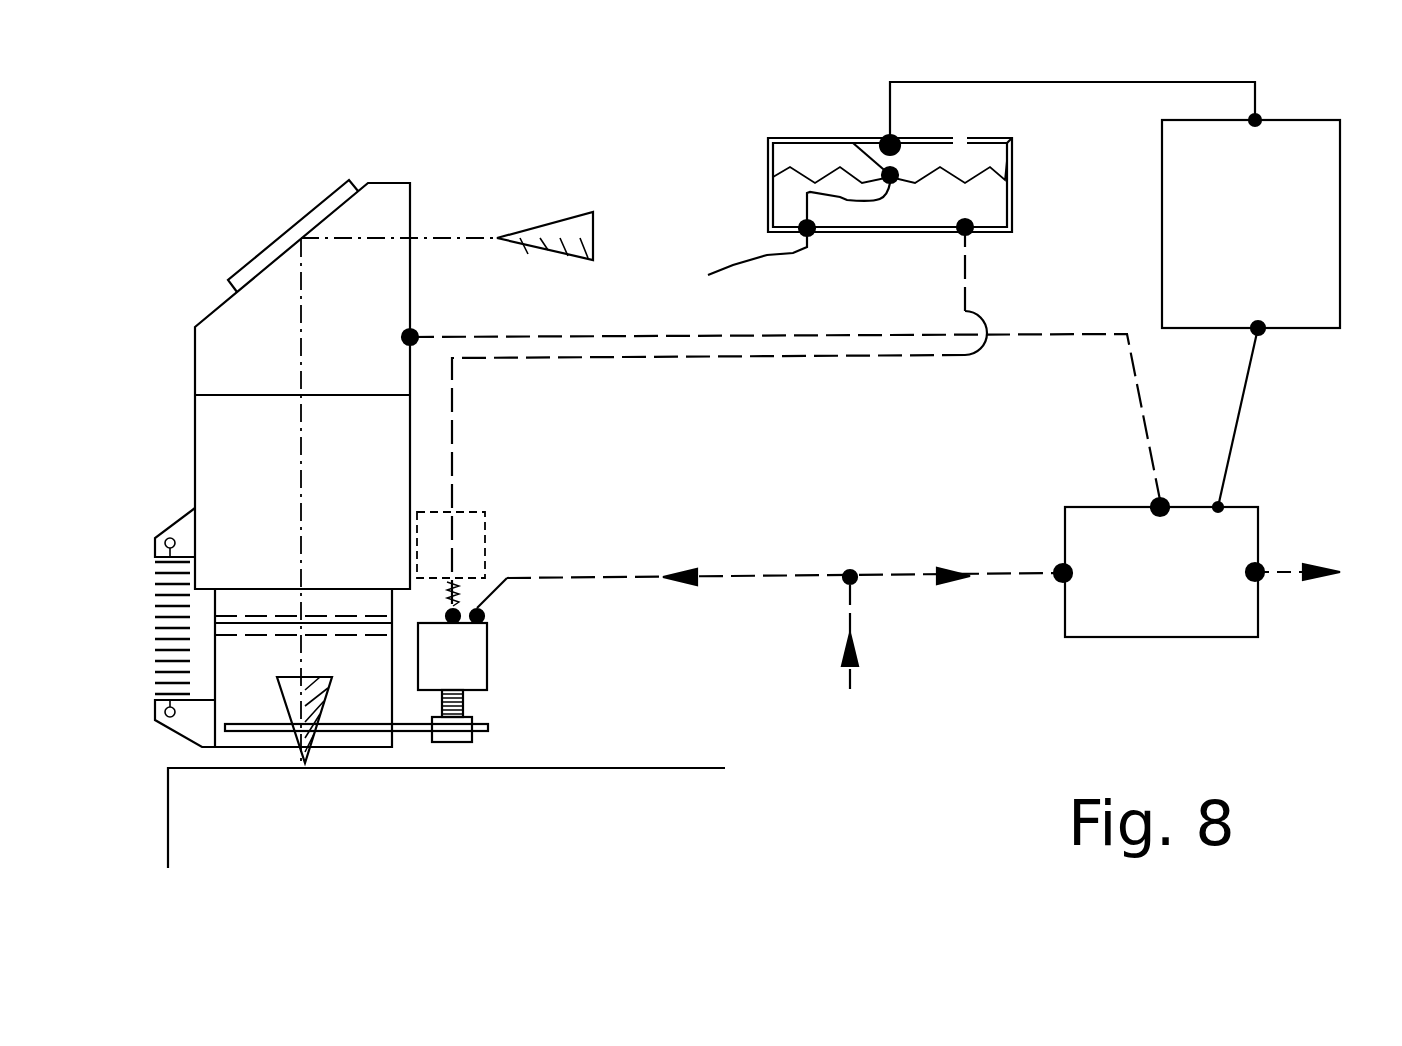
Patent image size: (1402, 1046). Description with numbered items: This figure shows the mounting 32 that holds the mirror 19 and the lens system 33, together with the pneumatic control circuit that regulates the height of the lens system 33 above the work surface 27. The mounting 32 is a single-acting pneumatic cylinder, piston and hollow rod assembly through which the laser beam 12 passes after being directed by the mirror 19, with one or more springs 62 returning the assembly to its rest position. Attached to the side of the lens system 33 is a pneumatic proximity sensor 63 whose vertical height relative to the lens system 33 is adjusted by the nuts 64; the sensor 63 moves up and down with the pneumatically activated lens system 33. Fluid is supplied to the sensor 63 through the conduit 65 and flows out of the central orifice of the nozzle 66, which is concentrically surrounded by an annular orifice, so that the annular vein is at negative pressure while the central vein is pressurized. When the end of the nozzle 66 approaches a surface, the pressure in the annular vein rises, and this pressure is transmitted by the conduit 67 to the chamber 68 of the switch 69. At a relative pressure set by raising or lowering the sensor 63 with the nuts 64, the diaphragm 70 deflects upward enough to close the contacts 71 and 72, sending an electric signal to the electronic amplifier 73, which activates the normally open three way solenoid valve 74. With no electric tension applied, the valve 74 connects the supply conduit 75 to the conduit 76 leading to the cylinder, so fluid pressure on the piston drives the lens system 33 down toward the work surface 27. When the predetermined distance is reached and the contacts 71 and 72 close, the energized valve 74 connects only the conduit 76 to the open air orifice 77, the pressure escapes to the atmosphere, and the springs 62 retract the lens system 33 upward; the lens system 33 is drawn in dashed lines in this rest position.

The laser beam 12 is at (593, 238).
The mirror 19 is at (280, 233).
The work surface 27 is at (446, 818).
The mounting 32 is at (195, 378).
The lens system 33 is at (247, 747).
The spring 62 is at (160, 677).
The pneumatic proximity sensor 63 is at (478, 657).
The nuts 64 is at (475, 708).
The conduit 65 is at (785, 557).
The nozzle 66 is at (450, 747).
The conduit 67 is at (719, 418).
The chamber 68 is at (860, 206).
The switch 69 is at (1012, 227).
The diaphragm 70 is at (1012, 140).
The contact 71 is at (882, 136).
The contact 72 is at (847, 143).
The electronic amplifier 73 is at (1251, 310).
The 3 way solenoid valve 74 is at (1159, 567).
The conduit 75 is at (855, 667).
The conduit 76 is at (781, 394).
The open air orifice 77 is at (1322, 568).